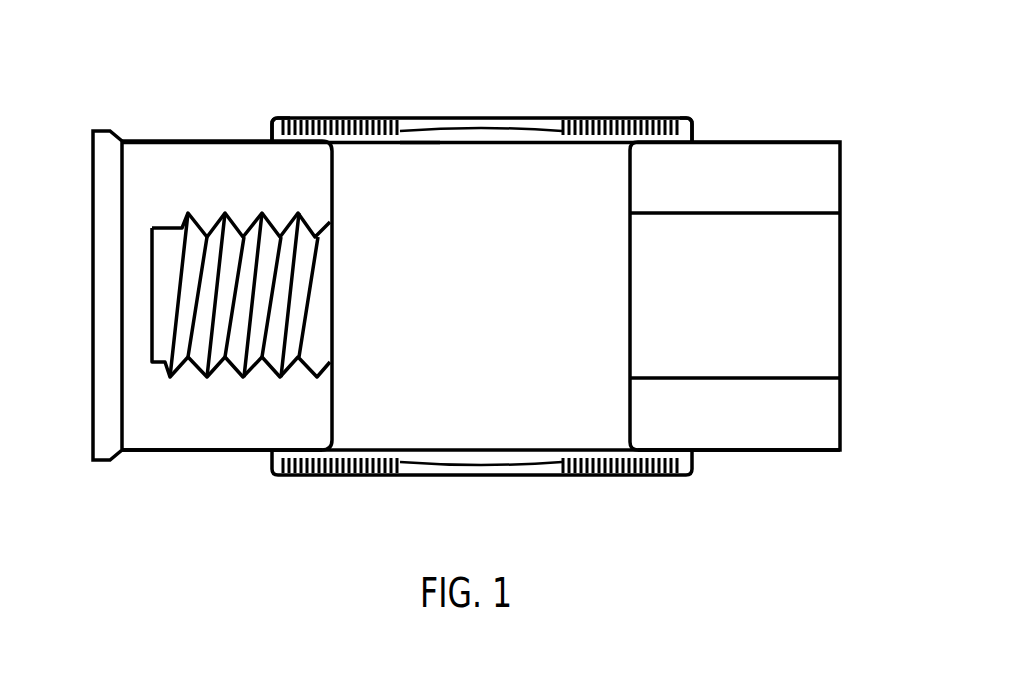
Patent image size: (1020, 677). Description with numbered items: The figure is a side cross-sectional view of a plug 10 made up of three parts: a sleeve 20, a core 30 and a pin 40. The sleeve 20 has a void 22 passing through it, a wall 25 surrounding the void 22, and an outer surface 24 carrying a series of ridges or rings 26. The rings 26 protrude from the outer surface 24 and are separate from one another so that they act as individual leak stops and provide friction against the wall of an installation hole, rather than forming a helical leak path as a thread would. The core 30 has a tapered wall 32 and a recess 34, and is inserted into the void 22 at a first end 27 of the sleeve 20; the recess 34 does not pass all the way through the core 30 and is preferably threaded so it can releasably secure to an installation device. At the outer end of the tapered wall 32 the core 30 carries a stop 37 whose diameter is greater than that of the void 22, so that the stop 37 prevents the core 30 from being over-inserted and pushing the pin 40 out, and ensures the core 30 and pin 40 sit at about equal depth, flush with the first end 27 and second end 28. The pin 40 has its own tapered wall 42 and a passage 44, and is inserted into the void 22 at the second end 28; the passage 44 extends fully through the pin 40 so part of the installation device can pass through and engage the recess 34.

The plug 10 is at (178, 58).
The sleeve 20 is at (404, 490).
The void 22 is at (516, 325).
The outer surface 24 is at (522, 118).
The wall 25 is at (418, 146).
The ridges or rings 26 is at (363, 118).
The first end 27 is at (264, 139).
The second end 28 is at (700, 135).
The core 30 is at (83, 428).
The tapered wall 32 is at (183, 455).
The recess 34 is at (312, 299).
The stop 37 is at (103, 129).
The pin 40 is at (860, 411).
The tapered wall 42 is at (782, 452).
The passage 44 is at (770, 287).